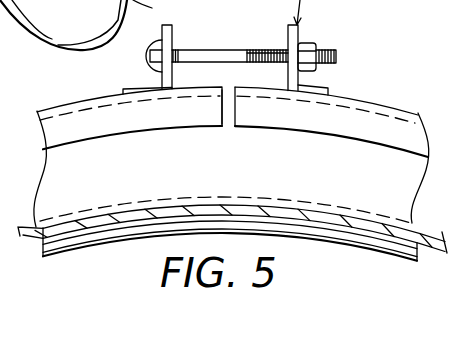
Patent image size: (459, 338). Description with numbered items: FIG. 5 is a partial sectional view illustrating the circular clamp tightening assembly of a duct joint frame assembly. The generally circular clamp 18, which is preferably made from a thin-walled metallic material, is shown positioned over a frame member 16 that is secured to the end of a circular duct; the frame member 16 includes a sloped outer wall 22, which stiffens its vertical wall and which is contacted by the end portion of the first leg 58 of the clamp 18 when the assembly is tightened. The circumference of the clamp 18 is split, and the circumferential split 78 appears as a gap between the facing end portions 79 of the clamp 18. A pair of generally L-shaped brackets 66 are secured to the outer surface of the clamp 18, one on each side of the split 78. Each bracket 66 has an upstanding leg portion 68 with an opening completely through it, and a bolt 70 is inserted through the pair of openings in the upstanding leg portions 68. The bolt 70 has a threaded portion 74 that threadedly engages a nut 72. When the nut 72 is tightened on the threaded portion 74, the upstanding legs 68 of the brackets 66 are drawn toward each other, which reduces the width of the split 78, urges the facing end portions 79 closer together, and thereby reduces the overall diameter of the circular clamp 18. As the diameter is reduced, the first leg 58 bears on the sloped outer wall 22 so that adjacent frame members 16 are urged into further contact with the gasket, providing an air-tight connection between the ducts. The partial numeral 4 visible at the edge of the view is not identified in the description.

The wheel 4 is at (229, 111).
The frame member 16 is at (400, 193).
The clamp 18 is at (232, 143).
The sloped outer wall 22 is at (93, 222).
The first leg 58 is at (105, 125).
The L-shaped bracket 66 is at (241, 47).
The upstanding leg portion 68 is at (162, 31).
The bolt 70 is at (228, 41).
The nut 72 is at (337, 66).
The threaded portion 74 is at (268, 48).
The circumferential split 78 is at (227, 124).
The facing end portion 79 is at (213, 106).